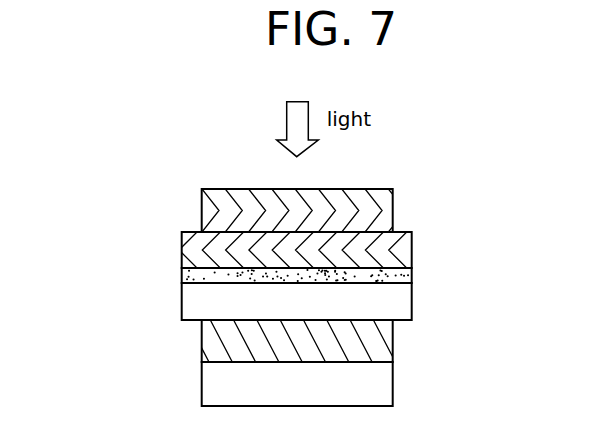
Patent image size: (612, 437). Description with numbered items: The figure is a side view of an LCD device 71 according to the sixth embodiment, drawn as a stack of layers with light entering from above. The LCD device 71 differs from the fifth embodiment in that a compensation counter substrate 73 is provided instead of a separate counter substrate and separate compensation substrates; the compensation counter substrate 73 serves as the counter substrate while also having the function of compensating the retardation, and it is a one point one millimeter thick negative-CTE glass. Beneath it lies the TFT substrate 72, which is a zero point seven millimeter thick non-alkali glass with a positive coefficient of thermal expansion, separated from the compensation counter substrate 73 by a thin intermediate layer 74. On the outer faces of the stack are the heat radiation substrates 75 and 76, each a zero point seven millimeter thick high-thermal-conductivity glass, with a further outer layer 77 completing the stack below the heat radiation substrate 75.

The LCD device 71 is at (168, 248).
The TFT substrate 72 is at (412, 300).
The compensation counter substrate 73 is at (412, 248).
The buffer layer 74 is at (412, 275).
The heat radiation substrate 75 is at (393, 337).
The heat radiation substrate 76 is at (393, 212).
The substrate 77 is at (393, 378).